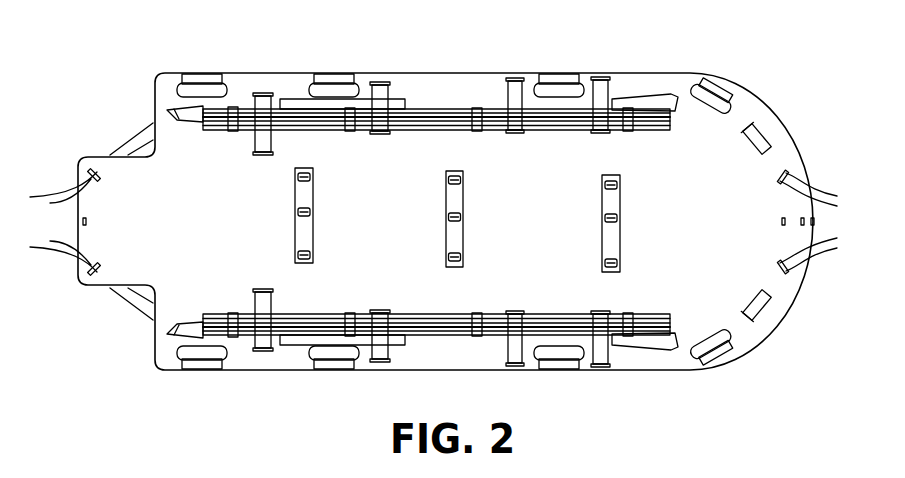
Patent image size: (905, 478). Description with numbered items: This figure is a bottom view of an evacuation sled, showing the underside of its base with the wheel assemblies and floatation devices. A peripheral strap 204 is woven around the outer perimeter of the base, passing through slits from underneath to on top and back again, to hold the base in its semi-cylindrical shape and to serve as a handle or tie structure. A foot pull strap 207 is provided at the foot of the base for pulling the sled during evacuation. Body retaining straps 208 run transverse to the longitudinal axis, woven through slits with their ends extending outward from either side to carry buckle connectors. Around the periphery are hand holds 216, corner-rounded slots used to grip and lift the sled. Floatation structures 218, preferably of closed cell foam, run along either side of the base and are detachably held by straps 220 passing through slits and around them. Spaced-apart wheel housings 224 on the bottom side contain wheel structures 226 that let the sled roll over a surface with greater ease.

The peripheral strap 204 is at (135, 141).
The foot pull strap 207 is at (64, 194).
The body retaining strap 208 is at (260, 307).
The hand hold 216 is at (185, 90).
The floatation structure 218 is at (662, 129).
The strap 220 is at (477, 109).
The wheel housing 224 is at (298, 236).
The wheel structure 226 is at (313, 177).